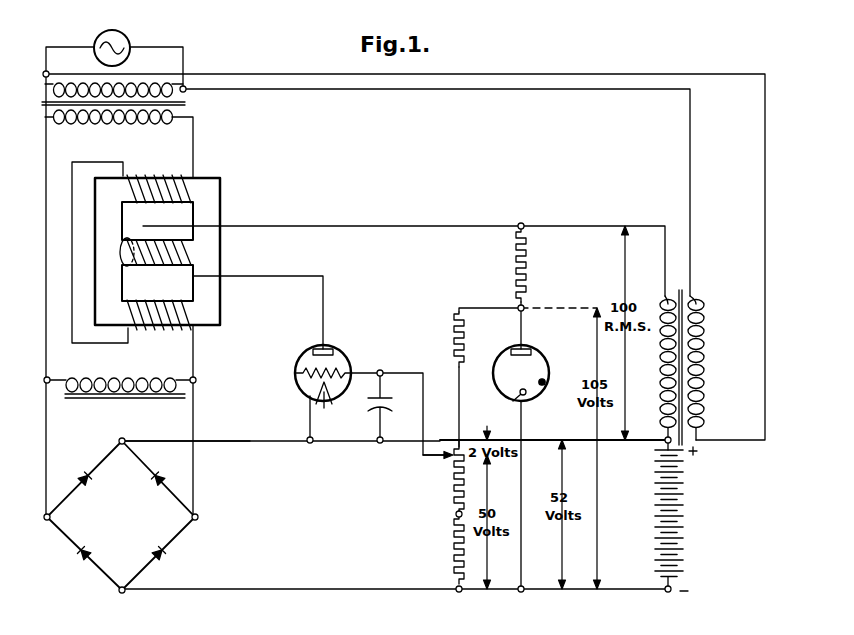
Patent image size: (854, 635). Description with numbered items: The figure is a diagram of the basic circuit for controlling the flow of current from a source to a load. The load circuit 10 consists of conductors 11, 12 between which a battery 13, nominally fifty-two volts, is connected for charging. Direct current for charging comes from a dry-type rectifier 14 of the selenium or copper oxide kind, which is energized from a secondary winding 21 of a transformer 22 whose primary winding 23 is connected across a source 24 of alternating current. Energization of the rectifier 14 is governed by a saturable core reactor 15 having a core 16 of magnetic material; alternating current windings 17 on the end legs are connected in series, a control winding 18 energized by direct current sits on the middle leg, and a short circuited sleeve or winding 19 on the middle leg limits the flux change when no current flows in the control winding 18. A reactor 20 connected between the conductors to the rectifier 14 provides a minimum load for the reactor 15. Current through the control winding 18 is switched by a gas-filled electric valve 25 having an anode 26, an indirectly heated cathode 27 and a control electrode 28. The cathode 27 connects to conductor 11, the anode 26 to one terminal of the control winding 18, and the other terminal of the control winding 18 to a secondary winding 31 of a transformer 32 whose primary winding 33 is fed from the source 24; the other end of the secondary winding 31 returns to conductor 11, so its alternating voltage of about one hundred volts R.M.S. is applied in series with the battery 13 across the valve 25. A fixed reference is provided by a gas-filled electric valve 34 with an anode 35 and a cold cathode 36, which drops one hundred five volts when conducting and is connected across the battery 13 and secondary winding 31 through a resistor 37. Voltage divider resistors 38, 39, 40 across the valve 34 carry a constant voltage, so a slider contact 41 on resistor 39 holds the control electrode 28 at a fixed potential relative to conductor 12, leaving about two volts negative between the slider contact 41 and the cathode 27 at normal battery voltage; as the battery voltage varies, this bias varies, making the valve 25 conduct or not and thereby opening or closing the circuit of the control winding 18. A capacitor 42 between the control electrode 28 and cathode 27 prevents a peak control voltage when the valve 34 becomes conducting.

The load circuit 10 is at (282, 431).
The conductor 11 is at (222, 443).
The conductor 12 is at (276, 590).
The battery 13 is at (711, 530).
The rectifier 14 is at (79, 469).
The saturable core reactor 15 is at (171, 245).
The core 16 is at (221, 205).
The alternating current windings 17 is at (158, 206).
The control winding 18 is at (146, 270).
The short circuited sleeve or winding 19 is at (129, 238).
The reactor 20 is at (133, 380).
The secondary winding 21 is at (133, 124).
The transformer 22 is at (218, 111).
The primary winding 23 is at (133, 88).
The source of alternating current 24 is at (127, 41).
The gas-filled electric valve 25 is at (322, 388).
The anode 26 is at (313, 349).
The indirectly heated cathode 27 is at (314, 390).
The control electrode 28 is at (295, 373).
The secondary winding 31 is at (662, 360).
The transformer 32 is at (682, 355).
The primary winding 33 is at (699, 358).
The electric valve 34 is at (523, 378).
The anode 35 is at (510, 351).
The cold cathode 36 is at (514, 401).
The resistor 37 is at (527, 268).
The resistor 38 is at (469, 327).
The resistor 39 is at (452, 489).
The resistor 40 is at (453, 541).
The slider contact 41 is at (449, 462).
The capacitor 42 is at (370, 405).